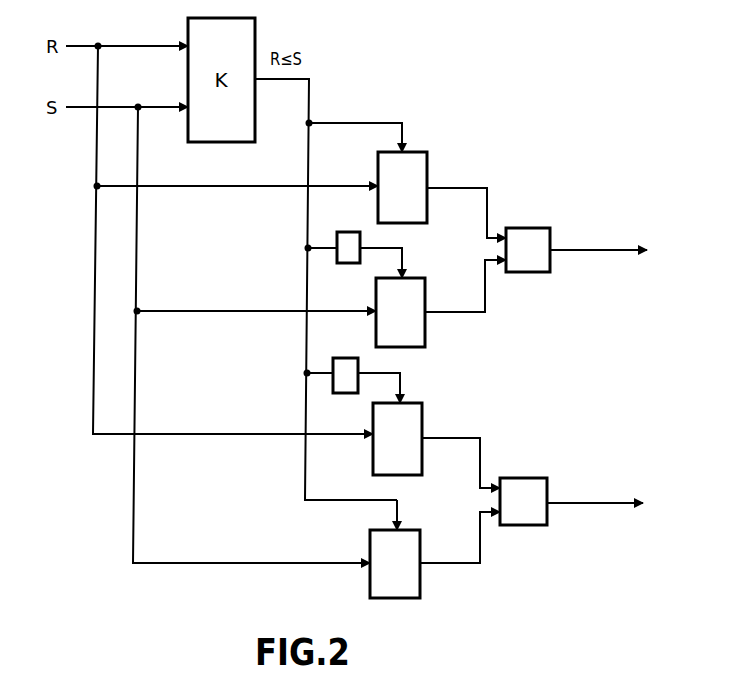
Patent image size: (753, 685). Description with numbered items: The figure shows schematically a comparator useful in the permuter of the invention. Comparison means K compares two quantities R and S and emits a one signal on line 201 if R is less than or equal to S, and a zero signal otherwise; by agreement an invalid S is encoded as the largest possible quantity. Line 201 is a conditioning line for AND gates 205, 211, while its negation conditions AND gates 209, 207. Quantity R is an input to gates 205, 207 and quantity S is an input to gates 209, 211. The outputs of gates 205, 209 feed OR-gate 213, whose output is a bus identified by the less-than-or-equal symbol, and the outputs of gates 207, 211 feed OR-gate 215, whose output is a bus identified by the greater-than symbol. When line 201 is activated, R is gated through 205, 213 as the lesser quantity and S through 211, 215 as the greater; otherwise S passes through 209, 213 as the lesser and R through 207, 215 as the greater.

The line 201 is at (311, 97).
The AND gate 205 is at (427, 170).
The AND gate 207 is at (422, 422).
The AND gate 209 is at (425, 290).
The AND gate 211 is at (420, 546).
The OR-gate 213 is at (530, 228).
The OR-gate 215 is at (523, 478).